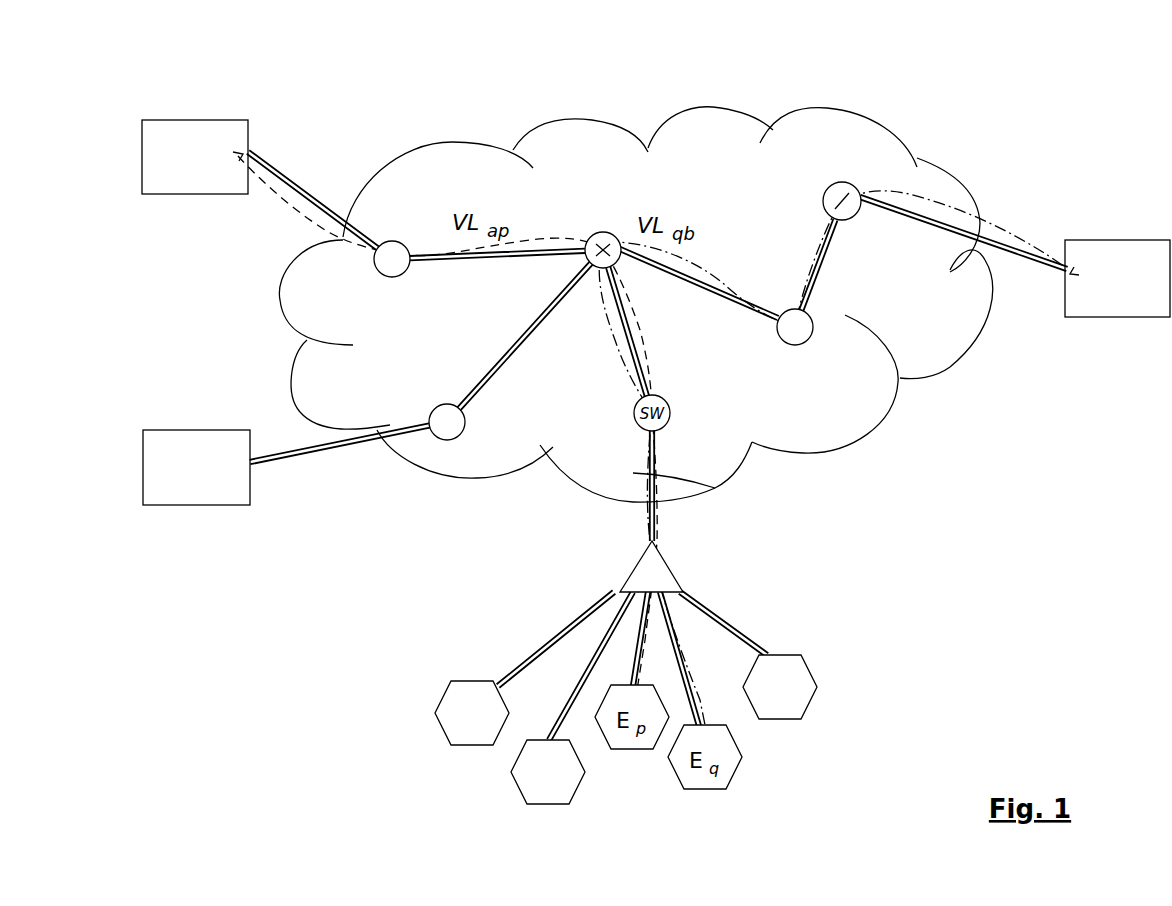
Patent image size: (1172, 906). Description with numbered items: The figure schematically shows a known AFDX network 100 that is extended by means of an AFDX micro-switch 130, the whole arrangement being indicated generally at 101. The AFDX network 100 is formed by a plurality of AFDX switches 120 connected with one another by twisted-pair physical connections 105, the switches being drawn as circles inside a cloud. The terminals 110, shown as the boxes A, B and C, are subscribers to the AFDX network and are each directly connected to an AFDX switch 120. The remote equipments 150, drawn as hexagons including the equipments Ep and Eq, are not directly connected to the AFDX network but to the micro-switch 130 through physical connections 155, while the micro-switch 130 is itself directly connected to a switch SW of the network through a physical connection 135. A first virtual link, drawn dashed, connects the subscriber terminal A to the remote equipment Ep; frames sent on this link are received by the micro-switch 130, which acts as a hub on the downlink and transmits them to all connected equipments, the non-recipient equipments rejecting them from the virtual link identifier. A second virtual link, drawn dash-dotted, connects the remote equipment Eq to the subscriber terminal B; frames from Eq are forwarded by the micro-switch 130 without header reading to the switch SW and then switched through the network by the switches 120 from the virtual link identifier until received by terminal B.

The AFDX network 100 is at (973, 192).
The network system 101 is at (956, 520).
The physical connections 105 is at (820, 268).
The terminals 110 is at (168, 118).
The AFDX switch 120 is at (835, 182).
The AFDX micro-switch 130 is at (665, 563).
The physical connection 135 is at (633, 473).
The remote equipments 150 is at (807, 665).
The physical connections 155 is at (565, 633).